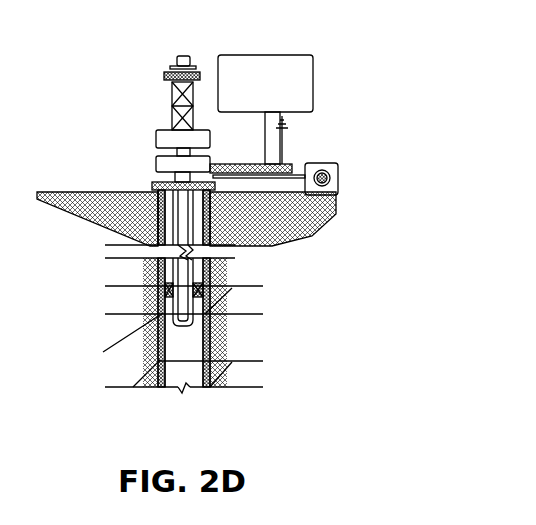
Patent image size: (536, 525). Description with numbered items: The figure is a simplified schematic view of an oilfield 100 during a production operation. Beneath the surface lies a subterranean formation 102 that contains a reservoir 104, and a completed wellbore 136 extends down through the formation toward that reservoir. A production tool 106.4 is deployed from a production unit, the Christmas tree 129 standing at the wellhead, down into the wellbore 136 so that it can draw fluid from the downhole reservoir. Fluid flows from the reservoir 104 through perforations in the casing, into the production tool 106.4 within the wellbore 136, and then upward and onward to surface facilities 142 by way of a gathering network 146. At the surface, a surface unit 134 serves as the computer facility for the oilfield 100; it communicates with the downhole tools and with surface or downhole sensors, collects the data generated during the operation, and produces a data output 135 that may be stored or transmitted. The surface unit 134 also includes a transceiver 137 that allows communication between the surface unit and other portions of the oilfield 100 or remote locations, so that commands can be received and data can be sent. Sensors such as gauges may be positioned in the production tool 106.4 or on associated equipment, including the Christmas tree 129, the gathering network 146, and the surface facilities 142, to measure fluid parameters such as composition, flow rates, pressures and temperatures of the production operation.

The oilfield 100 is at (103, 97).
The subterranean formation 102 is at (278, 298).
The reservoir 104 is at (262, 352).
The production tool 106.4 is at (150, 310).
The Christmas tree 129 is at (181, 55).
The surface unit 134 is at (262, 165).
The data output 135 is at (286, 55).
The wellbore 136 is at (208, 222).
The transceiver 137 is at (290, 141).
The surface facilities 142 is at (340, 181).
The gathering network 146 is at (298, 181).